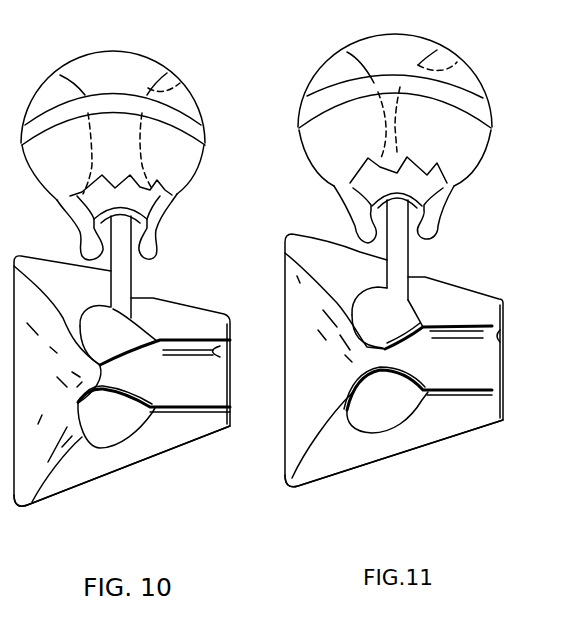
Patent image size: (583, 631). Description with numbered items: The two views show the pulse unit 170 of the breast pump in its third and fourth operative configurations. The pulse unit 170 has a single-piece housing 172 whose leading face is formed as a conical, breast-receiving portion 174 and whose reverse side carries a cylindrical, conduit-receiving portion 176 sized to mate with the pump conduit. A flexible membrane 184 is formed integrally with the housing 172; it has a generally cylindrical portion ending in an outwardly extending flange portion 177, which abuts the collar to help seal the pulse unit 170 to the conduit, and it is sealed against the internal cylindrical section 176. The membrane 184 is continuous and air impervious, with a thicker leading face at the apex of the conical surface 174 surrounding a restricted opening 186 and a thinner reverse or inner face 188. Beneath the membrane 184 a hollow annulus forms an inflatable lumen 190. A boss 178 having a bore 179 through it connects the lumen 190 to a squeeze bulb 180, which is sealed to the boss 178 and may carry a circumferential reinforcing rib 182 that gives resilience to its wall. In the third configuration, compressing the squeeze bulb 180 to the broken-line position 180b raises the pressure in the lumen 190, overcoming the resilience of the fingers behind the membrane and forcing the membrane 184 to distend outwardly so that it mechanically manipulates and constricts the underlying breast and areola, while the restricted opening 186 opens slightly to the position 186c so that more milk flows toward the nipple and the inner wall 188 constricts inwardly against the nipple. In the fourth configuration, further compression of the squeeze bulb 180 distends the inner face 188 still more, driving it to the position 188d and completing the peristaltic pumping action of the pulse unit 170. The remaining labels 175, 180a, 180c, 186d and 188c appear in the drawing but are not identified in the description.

In FIG. 10, the pulse unit 170 is at (165, 286).
In FIG. 11, the pulse unit 170 is at (440, 270).
In FIG. 10, the housing 172 is at (157, 450).
In FIG. 11, the housing 172 is at (422, 433).
In FIG. 10, the conical, breast-receiving portion 174 is at (2, 455).
In FIG. 11, the conical, breast-receiving portion 174 is at (313, 280).
In FIG. 10, the upper lip 175 is at (222, 352).
In FIG. 11, the upper lip 175 is at (507, 338).
In FIG. 10, the cylindrical, conduit-receiving portion 176 is at (188, 405).
In FIG. 11, the cylindrical, conduit-receiving portion 176 is at (455, 387).
In FIG. 10, the flange portion 177 is at (231, 420).
In FIG. 11, the flange portion 177 is at (507, 398).
In FIG. 10, the boss 178 is at (145, 265).
In FIG. 11, the boss 178 is at (417, 252).
In FIG. 10, the bore 179 is at (111, 232).
In FIG. 11, the bore 179 is at (386, 219).
In FIG. 10, the squeeze bulb 180 is at (157, 62).
In FIG. 11, the squeeze bulb 180 is at (425, 52).
In FIG. 10, the ball segment 180a is at (46, 134).
In FIG. 10, the squeeze bulb position 180b is at (187, 82).
In FIG. 11, the ball segment 180c is at (463, 62).
In FIG. 10, the reinforcing rib 182 is at (202, 134).
In FIG. 11, the reinforcing rib 182 is at (487, 105).
In FIG. 10, the flexible membrane 184 is at (77, 393).
In FIG. 11, the flexible membrane 184 is at (360, 372).
In FIG. 10, the restricted opening 186 is at (68, 352).
In FIG. 11, the restricted opening 186 is at (325, 340).
In FIG. 10, the restricted opening position 186c is at (90, 367).
In FIG. 11, the cavity wall 186d is at (378, 352).
In FIG. 10, the inner wall 188 is at (133, 397).
In FIG. 11, the inner wall 188 is at (413, 377).
In FIG. 10, the upper shelf 188c is at (203, 365).
In FIG. 11, the inner wall position 188d is at (413, 338).
In FIG. 10, the inflatable lumen 190 is at (100, 433).
In FIG. 11, the inflatable lumen 190 is at (377, 420).